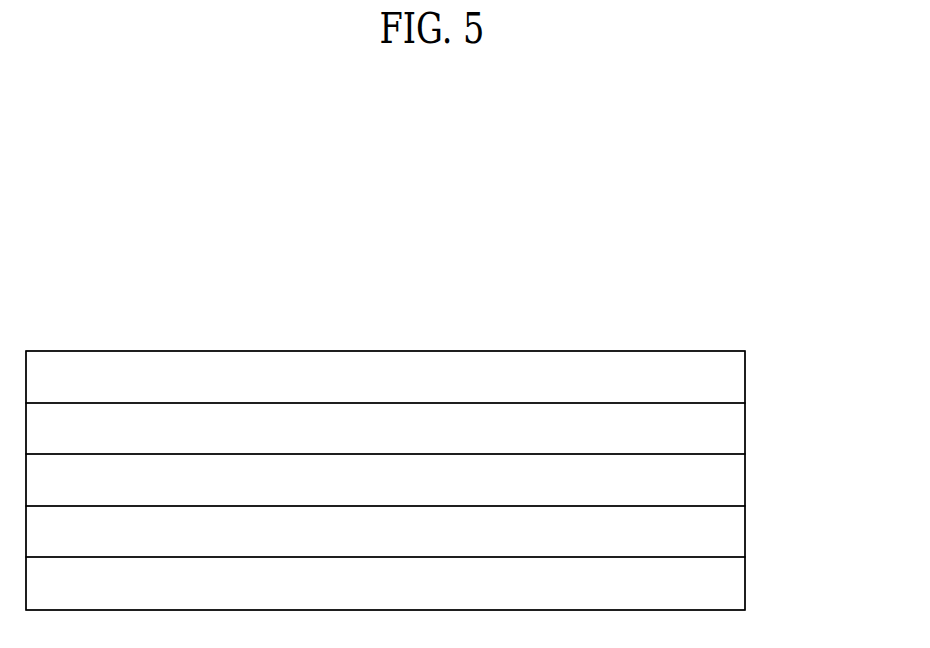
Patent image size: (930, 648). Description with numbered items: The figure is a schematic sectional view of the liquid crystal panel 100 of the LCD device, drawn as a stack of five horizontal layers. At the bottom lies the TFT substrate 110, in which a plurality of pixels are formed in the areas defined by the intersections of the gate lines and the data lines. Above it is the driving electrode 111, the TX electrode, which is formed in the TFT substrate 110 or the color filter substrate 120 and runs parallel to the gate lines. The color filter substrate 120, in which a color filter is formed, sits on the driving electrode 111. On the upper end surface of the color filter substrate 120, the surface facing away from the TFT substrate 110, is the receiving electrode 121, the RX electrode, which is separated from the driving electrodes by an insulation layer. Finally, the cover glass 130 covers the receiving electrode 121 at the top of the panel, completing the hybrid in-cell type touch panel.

The liquid crystal panel 100 is at (115, 322).
The cover glass 130 is at (745, 375).
The receiving electrode 121 is at (745, 428).
The color filter substrate 120 is at (745, 479).
The driving electrode 111 is at (745, 530).
The TFT substrate 110 is at (745, 581).